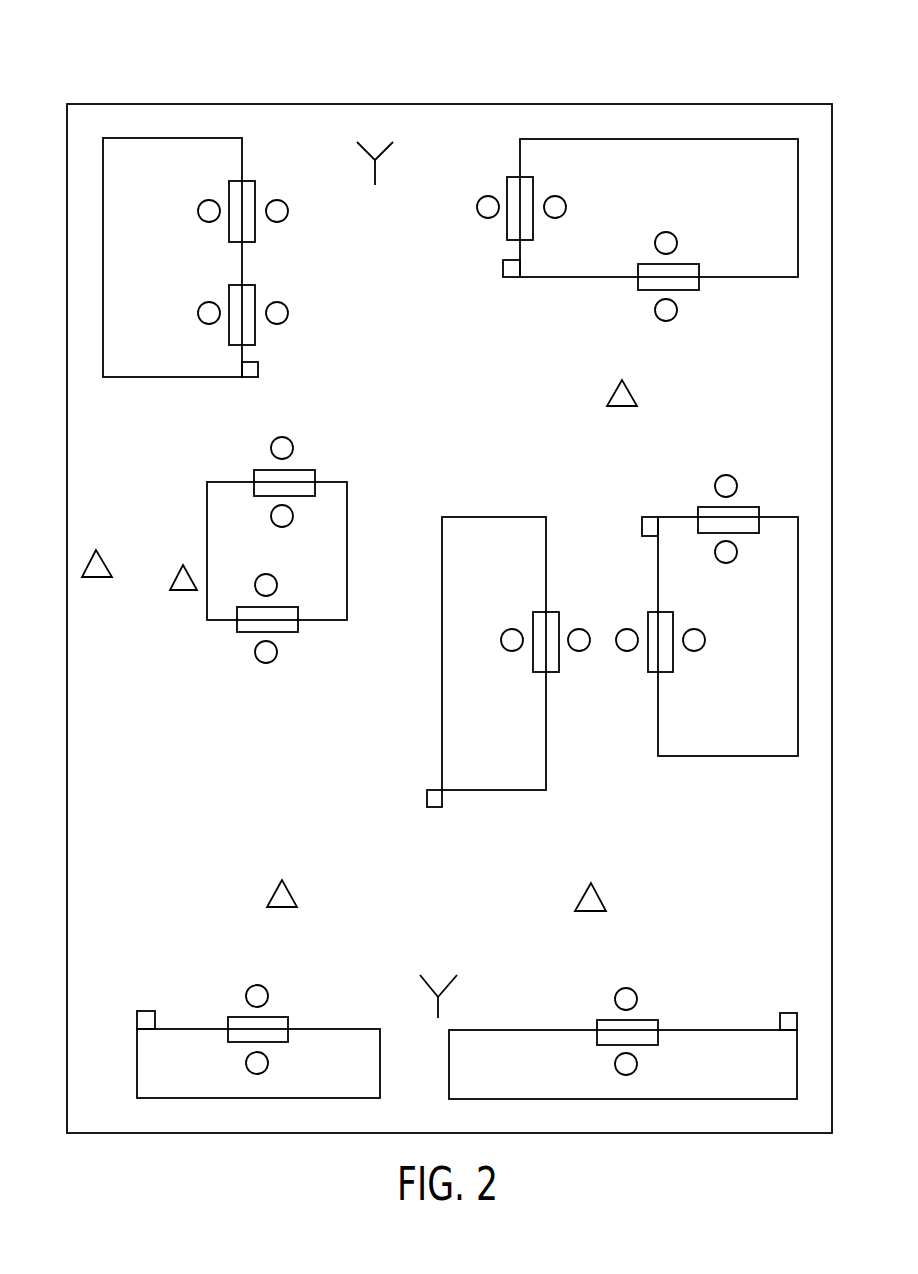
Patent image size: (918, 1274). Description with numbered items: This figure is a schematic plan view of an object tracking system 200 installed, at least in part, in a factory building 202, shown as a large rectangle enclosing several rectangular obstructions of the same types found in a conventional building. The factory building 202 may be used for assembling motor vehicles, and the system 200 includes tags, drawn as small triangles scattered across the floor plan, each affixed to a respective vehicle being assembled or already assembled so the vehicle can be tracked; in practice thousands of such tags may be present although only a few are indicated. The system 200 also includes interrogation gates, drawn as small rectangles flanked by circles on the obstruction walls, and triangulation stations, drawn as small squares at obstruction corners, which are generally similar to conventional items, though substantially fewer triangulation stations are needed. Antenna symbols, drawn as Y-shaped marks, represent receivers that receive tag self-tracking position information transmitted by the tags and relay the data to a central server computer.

The object tracking system 200 is at (105, 52).
The factory building 202 is at (557, 95).